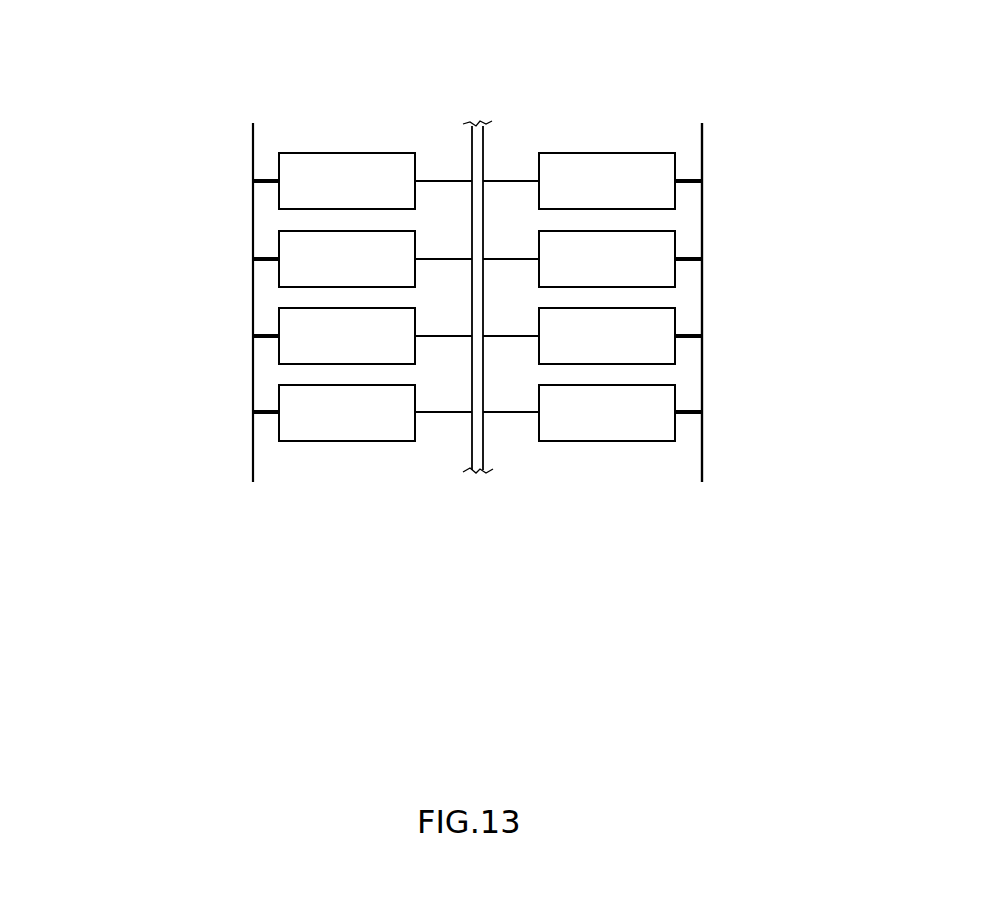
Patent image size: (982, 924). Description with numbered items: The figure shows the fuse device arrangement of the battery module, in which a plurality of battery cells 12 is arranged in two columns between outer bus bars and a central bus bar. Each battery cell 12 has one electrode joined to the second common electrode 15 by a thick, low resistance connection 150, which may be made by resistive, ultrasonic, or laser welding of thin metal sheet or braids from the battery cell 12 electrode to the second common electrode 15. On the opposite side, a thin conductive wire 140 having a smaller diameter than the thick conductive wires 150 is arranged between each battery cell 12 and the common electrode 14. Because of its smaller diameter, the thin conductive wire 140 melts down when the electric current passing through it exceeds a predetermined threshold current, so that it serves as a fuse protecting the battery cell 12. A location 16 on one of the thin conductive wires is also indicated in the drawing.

The battery cell 12 is at (350, 153).
The common electrode 14 is at (478, 128).
The second common electrode 15 is at (700, 290).
The low resistance connection 150 is at (273, 183).
The thin conductive wire 140 is at (508, 412).
The connection point 16 is at (514, 438).